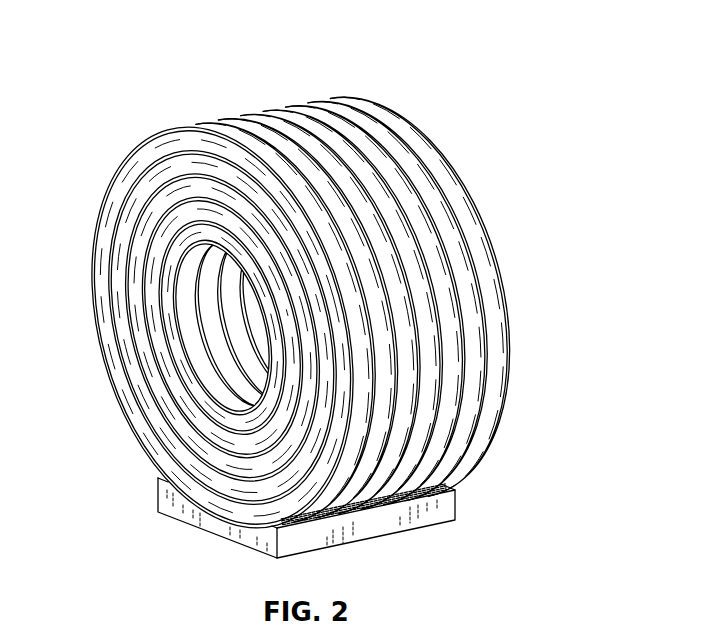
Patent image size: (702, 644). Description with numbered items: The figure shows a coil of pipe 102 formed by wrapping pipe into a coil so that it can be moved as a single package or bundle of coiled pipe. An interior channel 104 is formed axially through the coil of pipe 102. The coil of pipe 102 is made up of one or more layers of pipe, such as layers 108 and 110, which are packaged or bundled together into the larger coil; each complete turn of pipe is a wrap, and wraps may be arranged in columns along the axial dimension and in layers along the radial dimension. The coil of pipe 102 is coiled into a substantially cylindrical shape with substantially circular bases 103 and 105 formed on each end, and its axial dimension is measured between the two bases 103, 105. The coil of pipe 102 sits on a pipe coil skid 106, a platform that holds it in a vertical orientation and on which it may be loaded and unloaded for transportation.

The coil of pipe 102 is at (530, 307).
The base 103 is at (160, 148).
The interior channel 104 is at (228, 358).
The base 105 is at (365, 107).
The pipe coil skid 106 is at (443, 508).
The layer 108 is at (125, 189).
The layer 110 is at (168, 295).